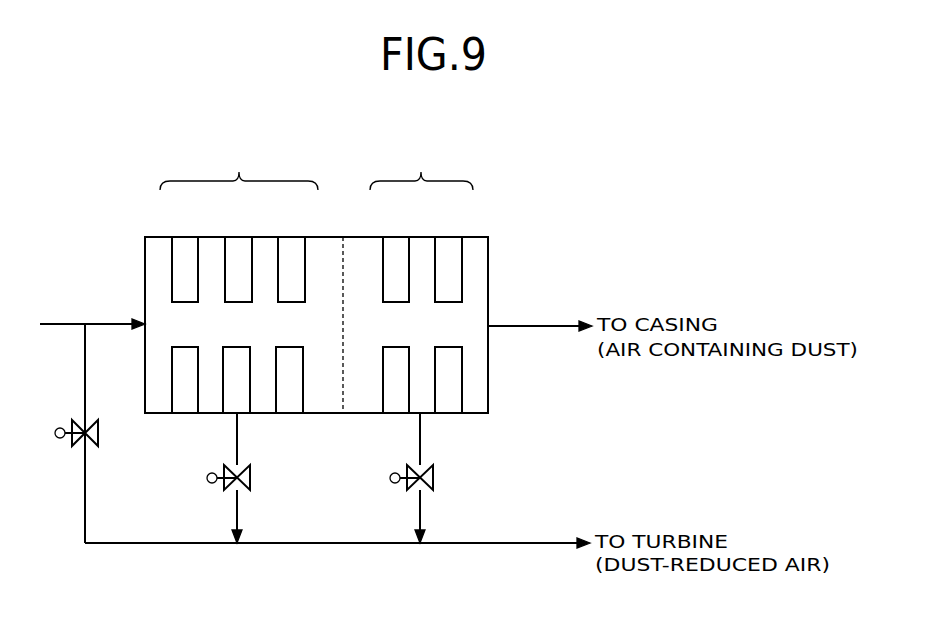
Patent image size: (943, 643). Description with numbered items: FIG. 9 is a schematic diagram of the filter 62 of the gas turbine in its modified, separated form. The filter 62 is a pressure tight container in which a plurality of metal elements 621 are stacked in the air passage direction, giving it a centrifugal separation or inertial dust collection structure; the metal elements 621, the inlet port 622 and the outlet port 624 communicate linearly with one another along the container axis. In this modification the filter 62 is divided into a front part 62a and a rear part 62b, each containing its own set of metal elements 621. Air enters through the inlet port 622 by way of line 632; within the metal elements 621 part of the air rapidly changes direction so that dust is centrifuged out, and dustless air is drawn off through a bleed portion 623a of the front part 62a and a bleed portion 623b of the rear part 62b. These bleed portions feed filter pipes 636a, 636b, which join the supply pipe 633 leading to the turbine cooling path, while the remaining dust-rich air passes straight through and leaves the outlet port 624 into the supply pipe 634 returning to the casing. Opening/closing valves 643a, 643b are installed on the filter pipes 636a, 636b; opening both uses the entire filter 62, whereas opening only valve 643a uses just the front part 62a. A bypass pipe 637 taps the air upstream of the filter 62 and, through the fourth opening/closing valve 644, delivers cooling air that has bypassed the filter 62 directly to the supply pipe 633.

The filter 62 is at (488, 190).
The front part 62a is at (239, 166).
The rear part 62b is at (421, 166).
The metal elements 621 is at (315, 301).
The inlet port 622 is at (288, 237).
The bleed portion 623a is at (262, 439).
The bleed portion 623b is at (445, 439).
The outlet port 624 is at (515, 325).
The air inlet line 632 is at (92, 301).
The supply pipe 633 is at (337, 568).
The supply pipe 634 is at (540, 302).
The filter pipe 636a is at (198, 516).
The filter pipe 636b is at (381, 516).
The bypass pipe 637 is at (53, 433).
The opening/closing valve 643a is at (202, 487).
The opening/closing valve 643b is at (385, 487).
The fourth opening/closing valve 644 is at (56, 442).